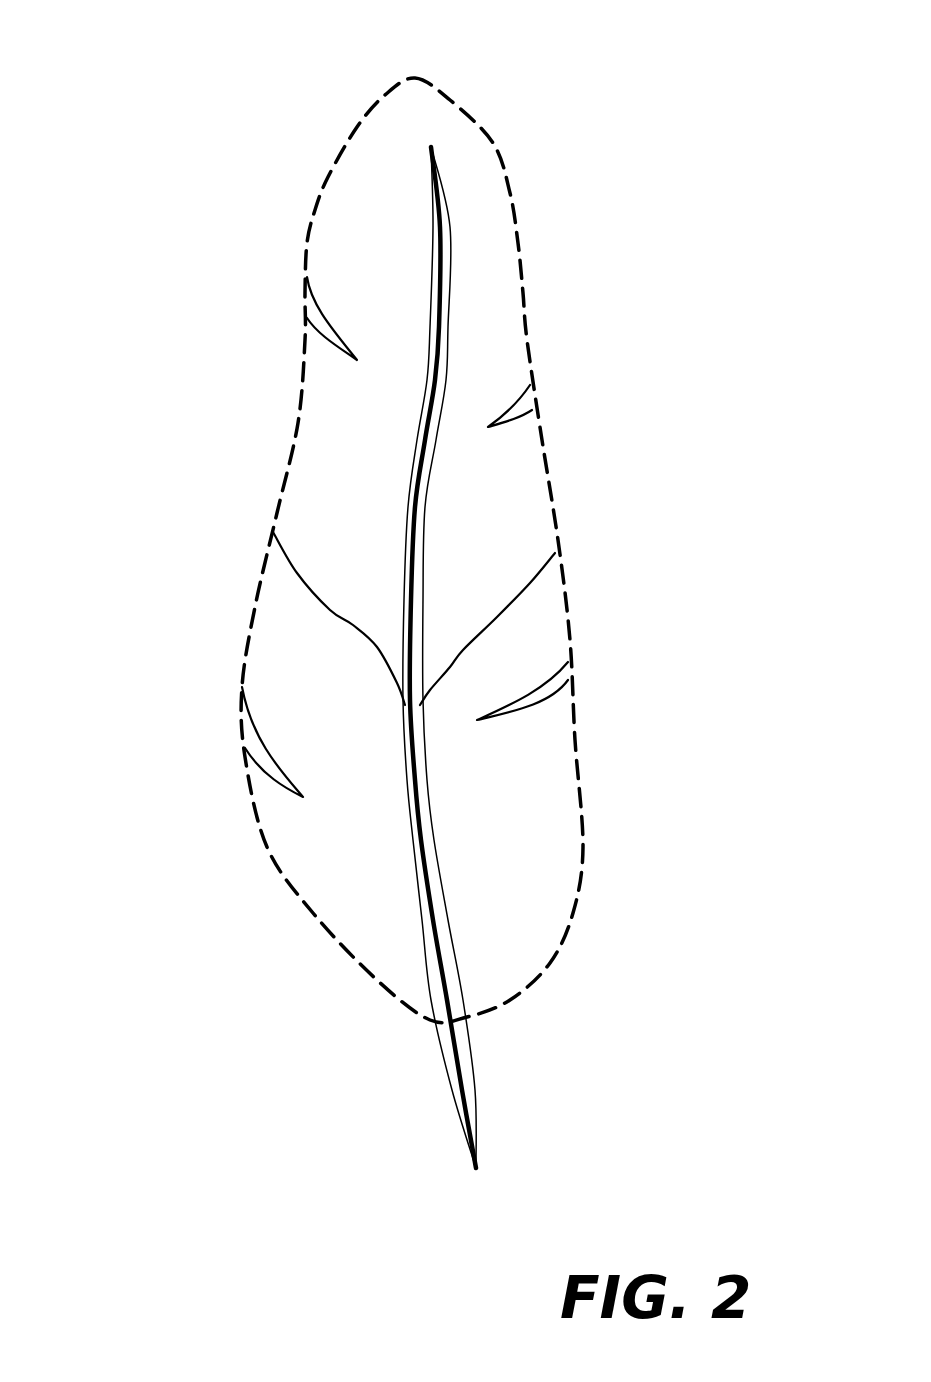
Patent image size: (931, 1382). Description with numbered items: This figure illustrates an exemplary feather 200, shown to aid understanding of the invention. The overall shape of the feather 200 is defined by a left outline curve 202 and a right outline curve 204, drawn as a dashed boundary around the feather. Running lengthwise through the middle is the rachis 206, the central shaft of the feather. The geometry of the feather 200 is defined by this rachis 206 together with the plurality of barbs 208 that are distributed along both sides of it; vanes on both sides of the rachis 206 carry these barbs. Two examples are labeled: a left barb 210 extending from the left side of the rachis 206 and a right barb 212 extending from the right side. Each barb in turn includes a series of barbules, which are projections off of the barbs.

The feather 200 is at (267, 96).
The left outline curve 202 is at (297, 418).
The right outline curve 204 is at (532, 382).
The rachis 206 is at (420, 835).
The plurality of barbs 208 is at (515, 793).
The left barb 210 is at (355, 627).
The right barb 212 is at (453, 660).